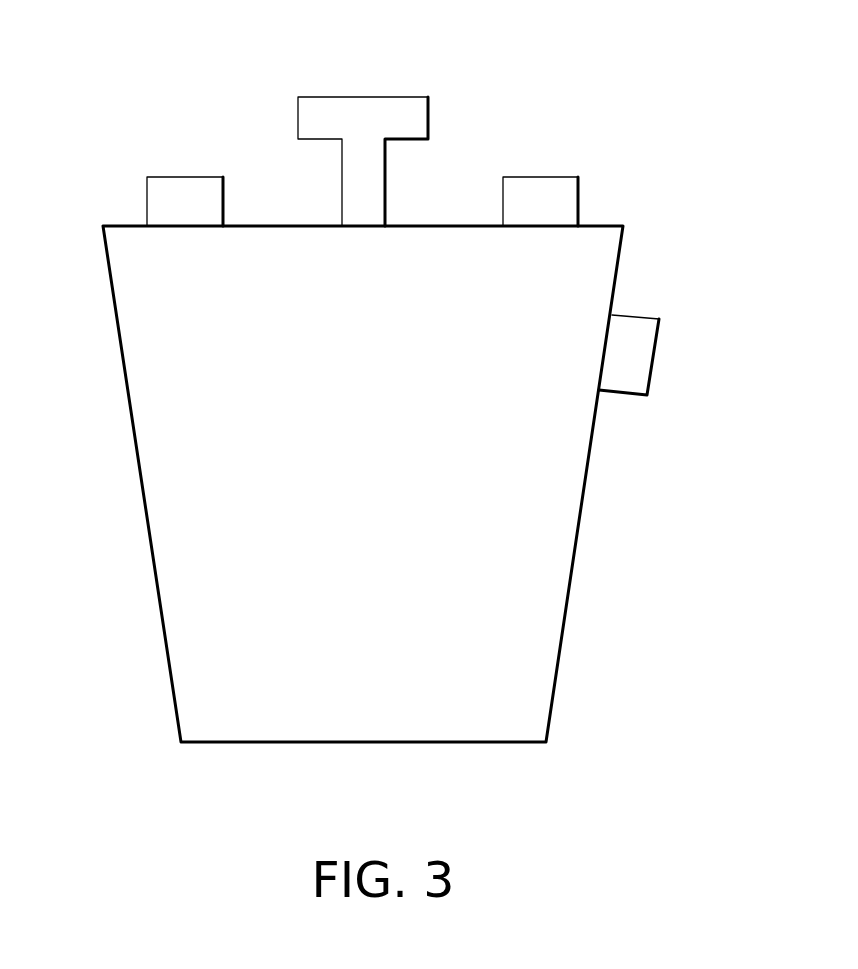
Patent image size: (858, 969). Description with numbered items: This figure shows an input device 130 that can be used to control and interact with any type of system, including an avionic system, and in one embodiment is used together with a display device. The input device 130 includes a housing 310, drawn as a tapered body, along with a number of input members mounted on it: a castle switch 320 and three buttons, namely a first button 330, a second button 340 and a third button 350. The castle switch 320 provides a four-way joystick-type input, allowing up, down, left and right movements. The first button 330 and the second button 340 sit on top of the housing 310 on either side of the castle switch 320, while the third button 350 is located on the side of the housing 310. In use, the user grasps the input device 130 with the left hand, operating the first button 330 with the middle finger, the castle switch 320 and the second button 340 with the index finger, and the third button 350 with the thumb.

The input device 130 is at (781, 104).
The housing 310 is at (580, 533).
The castle switch 320 is at (362, 96).
The first button 330 is at (183, 177).
The second button 340 is at (541, 176).
The third button 350 is at (657, 358).